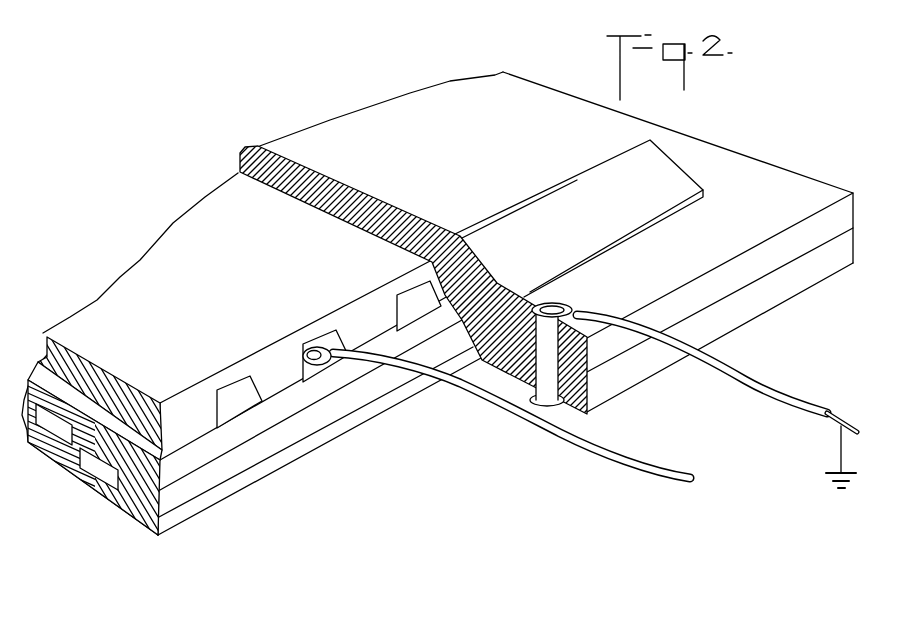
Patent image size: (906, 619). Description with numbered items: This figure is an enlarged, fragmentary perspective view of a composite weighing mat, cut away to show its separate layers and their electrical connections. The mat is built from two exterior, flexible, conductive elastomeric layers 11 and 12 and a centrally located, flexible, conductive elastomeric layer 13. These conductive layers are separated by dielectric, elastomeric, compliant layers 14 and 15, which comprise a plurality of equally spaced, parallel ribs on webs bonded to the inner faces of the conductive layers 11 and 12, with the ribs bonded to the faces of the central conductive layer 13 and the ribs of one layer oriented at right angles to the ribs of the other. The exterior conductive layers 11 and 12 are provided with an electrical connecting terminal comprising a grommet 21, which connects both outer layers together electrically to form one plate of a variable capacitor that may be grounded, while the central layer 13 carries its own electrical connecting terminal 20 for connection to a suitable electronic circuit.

The exterior conductive elastomeric layer 11 is at (300, 171).
The exterior conductive elastomeric layer 12 is at (608, 405).
The central conductive elastomeric layer 13 is at (172, 472).
The dielectric elastomeric compliant layer 14 is at (260, 390).
The dielectric elastomeric compliant layer 15 is at (221, 480).
The electrical connecting terminal 20 is at (308, 346).
The grommet 21 is at (563, 302).